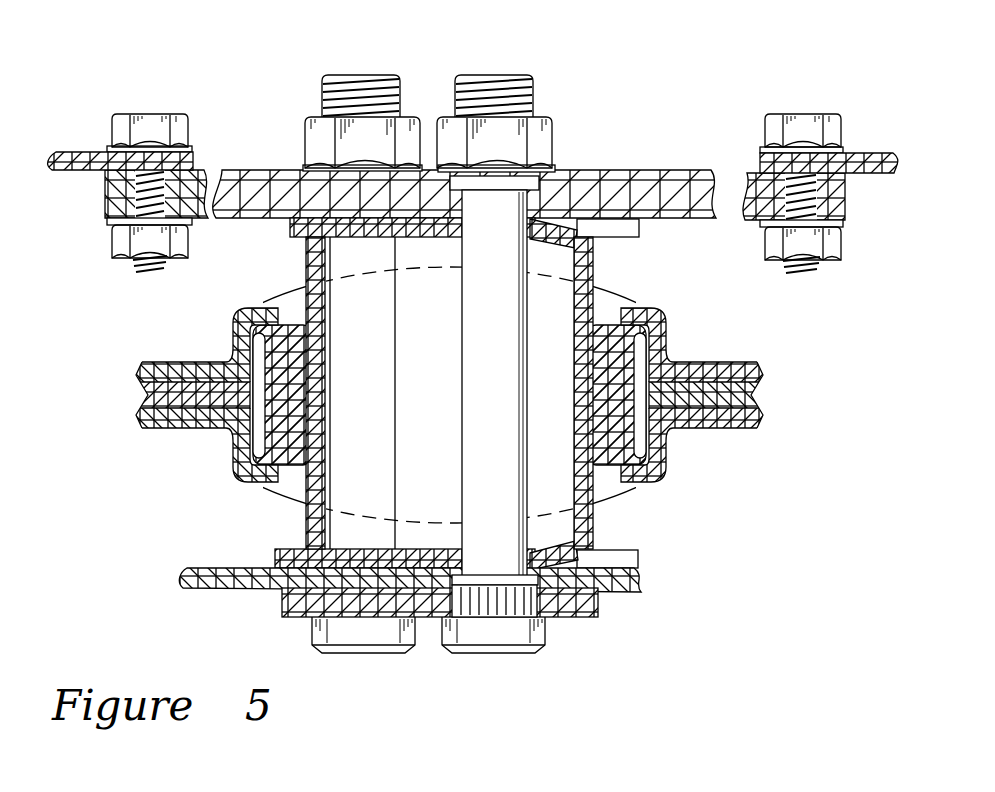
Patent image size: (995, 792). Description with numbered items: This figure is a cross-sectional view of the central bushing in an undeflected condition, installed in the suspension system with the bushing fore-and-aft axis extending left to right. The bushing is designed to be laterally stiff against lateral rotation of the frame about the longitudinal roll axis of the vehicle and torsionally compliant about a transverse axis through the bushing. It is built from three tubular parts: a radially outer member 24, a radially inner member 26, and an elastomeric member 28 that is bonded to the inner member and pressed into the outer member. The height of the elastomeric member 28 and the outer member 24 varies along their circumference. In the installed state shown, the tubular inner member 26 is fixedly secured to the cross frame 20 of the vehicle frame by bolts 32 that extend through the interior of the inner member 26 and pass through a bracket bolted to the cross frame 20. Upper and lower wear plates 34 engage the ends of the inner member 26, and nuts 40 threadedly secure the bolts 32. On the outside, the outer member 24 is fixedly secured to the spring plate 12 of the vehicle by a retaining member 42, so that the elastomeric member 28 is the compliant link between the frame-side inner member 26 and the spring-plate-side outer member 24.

The spring plate 12 is at (760, 388).
The cross frame 20 is at (879, 156).
The radially outer member 24 is at (641, 346).
The radially inner member 26 is at (584, 272).
The elastomeric member 28 is at (605, 463).
The bolts 32 is at (523, 74).
The wear plates 34 is at (640, 233).
The nuts 40 is at (550, 128).
The retaining member 42 is at (740, 367).